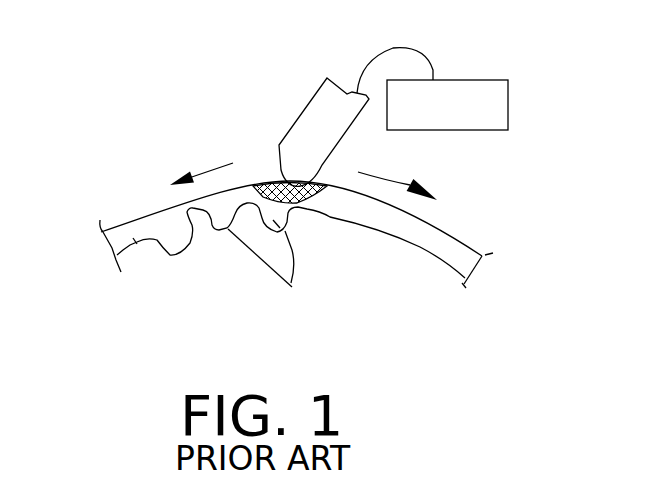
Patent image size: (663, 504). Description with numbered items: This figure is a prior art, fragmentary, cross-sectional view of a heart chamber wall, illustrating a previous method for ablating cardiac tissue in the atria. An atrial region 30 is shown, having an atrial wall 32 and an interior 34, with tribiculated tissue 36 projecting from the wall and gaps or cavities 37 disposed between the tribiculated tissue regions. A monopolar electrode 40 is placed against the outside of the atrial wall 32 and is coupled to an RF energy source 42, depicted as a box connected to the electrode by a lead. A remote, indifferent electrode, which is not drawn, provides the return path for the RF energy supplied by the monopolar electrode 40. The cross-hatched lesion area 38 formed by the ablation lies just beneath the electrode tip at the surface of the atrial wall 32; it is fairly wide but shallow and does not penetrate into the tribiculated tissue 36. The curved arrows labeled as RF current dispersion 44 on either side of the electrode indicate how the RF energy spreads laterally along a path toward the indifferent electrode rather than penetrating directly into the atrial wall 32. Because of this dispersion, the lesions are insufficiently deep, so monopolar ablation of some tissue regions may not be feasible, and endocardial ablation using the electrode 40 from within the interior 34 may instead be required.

The atrial region 30 is at (166, 71).
The atrial wall 32 is at (130, 253).
The interior 34 is at (223, 311).
The tribiculated tissue 36 is at (282, 277).
The gaps or cavities 37 is at (197, 219).
The lesion area 38 is at (272, 182).
The monopolar electrode 40 is at (317, 168).
The RF energy source 42 is at (508, 105).
The RF current dispersion 44 is at (205, 172).